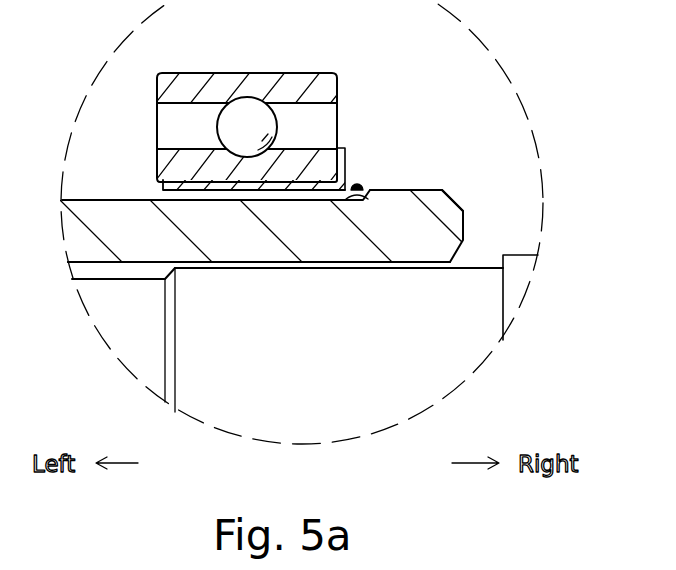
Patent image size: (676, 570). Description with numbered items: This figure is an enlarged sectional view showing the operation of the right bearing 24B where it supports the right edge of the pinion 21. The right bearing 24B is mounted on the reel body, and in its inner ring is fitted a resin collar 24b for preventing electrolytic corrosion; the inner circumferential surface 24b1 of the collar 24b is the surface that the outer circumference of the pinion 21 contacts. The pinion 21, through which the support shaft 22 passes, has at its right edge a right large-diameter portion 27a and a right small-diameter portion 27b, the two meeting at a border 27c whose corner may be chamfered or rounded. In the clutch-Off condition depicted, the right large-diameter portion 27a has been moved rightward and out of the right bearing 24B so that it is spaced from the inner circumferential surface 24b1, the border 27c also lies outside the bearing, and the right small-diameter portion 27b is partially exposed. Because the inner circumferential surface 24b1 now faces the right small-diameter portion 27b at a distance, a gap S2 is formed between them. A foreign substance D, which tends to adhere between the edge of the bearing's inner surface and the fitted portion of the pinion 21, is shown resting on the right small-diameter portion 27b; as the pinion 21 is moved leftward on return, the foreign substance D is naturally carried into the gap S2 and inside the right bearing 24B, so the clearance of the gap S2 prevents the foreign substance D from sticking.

The right bearing 24B is at (289, 73).
The pinion 21 is at (127, 195).
The resin collar 24b is at (340, 149).
The gap S2 is at (355, 172).
The right large-diameter portion 27a is at (402, 189).
The foreign substance D is at (362, 186).
The support shaft 22 is at (477, 292).
The right small-diameter portion 27b is at (229, 200).
The inner circumferential surface 24b1 is at (286, 190).
The border 27c is at (347, 197).